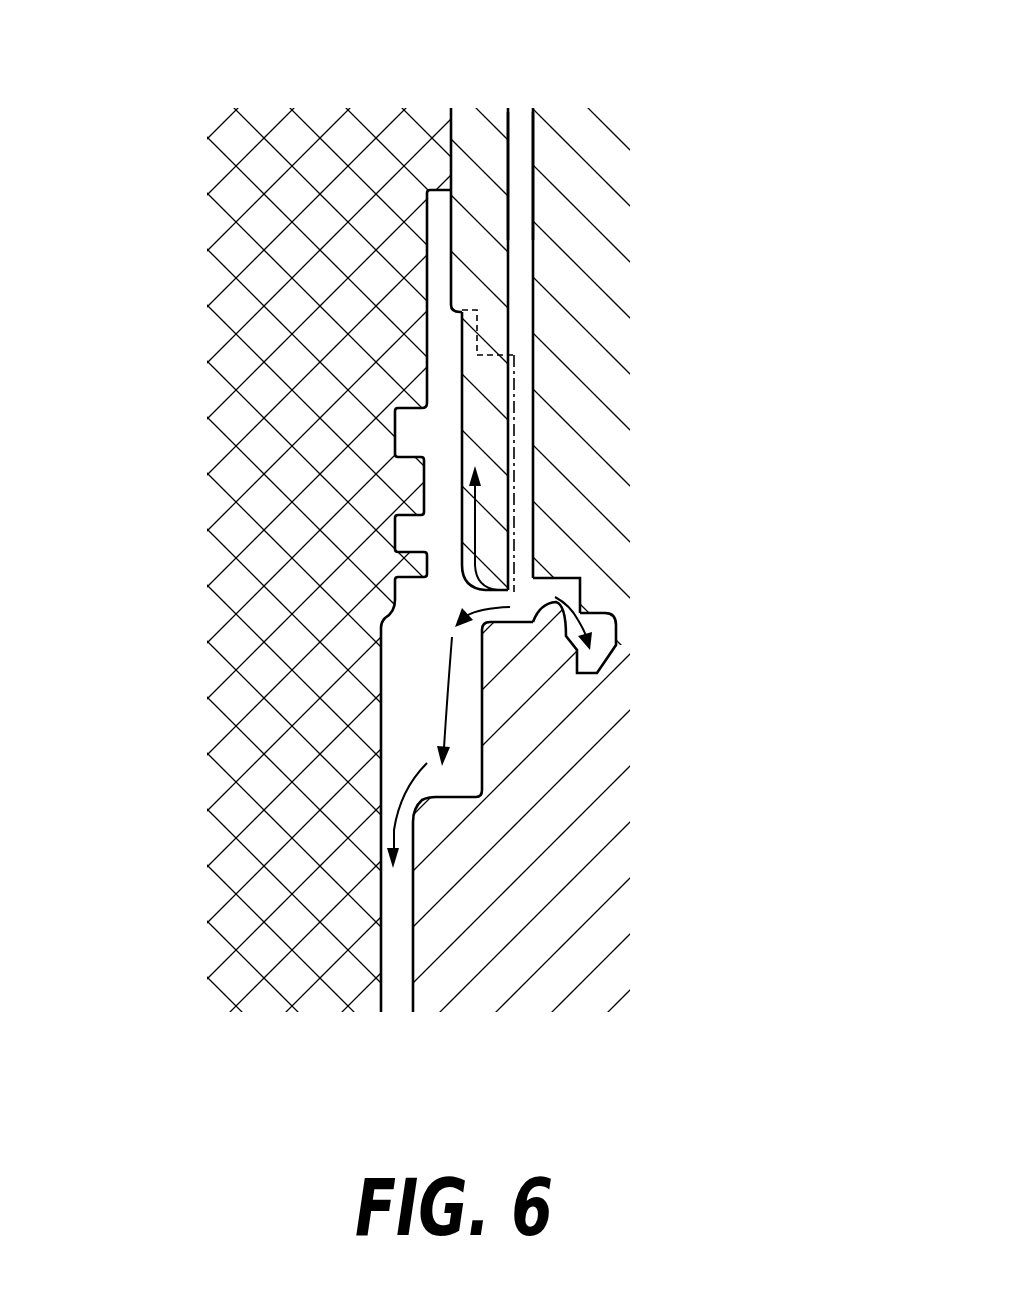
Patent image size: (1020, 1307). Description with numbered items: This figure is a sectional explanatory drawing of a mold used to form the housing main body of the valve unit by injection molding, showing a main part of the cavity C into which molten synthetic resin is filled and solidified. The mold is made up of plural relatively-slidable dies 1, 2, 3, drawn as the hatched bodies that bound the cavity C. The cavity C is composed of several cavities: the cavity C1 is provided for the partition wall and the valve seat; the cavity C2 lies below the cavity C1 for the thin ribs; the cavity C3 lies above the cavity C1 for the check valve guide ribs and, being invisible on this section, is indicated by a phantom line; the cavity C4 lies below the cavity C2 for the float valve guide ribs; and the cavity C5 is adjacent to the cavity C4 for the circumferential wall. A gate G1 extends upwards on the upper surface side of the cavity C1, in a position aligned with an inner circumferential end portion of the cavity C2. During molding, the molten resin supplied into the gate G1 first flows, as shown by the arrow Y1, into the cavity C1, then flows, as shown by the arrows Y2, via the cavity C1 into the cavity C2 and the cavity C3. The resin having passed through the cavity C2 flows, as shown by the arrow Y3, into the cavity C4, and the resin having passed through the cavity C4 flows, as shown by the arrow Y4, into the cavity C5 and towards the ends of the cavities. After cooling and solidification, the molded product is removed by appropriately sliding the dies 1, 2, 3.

The die 1 is at (470, 970).
The die 2 is at (232, 308).
The die 3 is at (573, 115).
The cavity C is at (392, 662).
The cavity C1 is at (573, 590).
The cavity C2 is at (495, 630).
The cavity C3 is at (514, 430).
The cavity C4 is at (472, 792).
The cavity C5 is at (388, 792).
The gate G1 is at (533, 247).
The arrow Y1 is at (618, 627).
The arrows Y2 is at (480, 525).
The arrow Y3 is at (445, 735).
The arrow Y4 is at (392, 843).